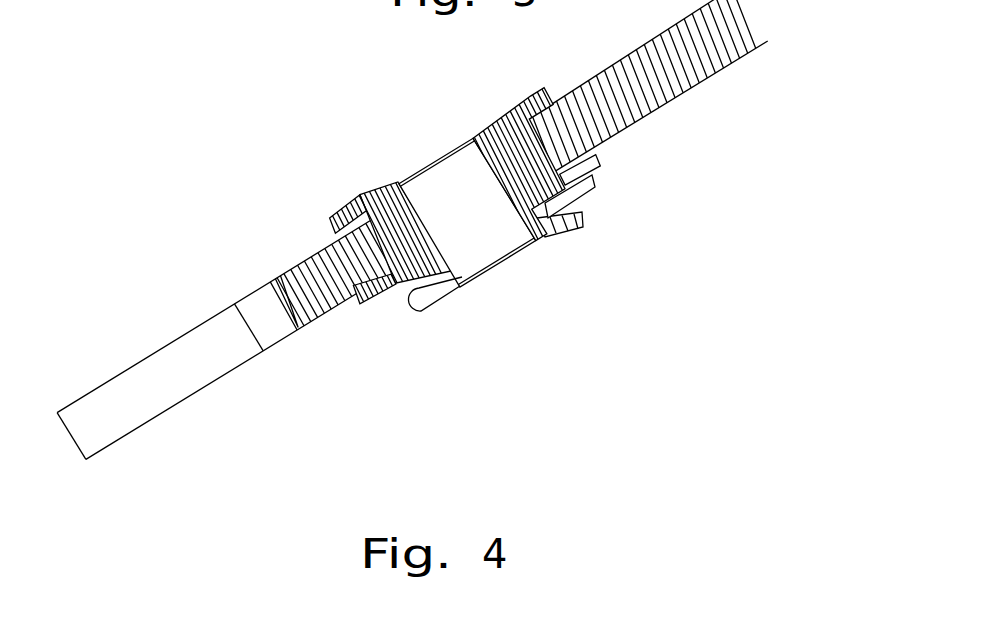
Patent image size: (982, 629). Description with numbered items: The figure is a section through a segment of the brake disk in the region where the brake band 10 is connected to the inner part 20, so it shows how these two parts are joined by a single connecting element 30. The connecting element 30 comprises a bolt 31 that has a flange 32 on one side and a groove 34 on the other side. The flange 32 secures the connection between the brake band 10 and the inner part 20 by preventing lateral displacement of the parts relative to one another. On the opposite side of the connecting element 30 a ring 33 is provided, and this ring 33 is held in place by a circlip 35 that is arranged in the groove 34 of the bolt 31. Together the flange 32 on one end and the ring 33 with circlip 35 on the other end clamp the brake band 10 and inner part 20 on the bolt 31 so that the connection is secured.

The brake band 10 is at (731, 55).
The inner part 20 is at (197, 378).
The connecting element 30 is at (506, 211).
The bolt 31 is at (388, 194).
The flange 32 is at (537, 105).
The ring 33 is at (600, 154).
The groove 34 is at (428, 270).
The circlip 35 is at (591, 182).